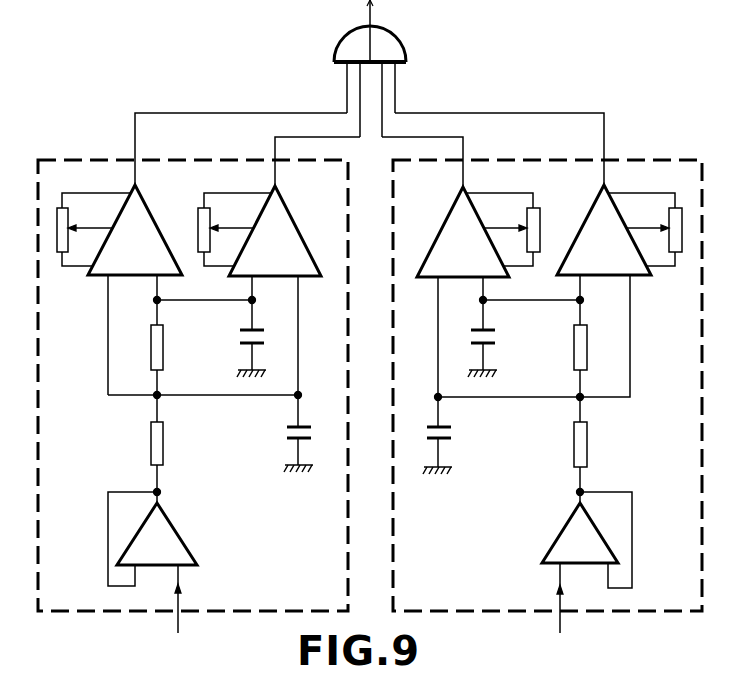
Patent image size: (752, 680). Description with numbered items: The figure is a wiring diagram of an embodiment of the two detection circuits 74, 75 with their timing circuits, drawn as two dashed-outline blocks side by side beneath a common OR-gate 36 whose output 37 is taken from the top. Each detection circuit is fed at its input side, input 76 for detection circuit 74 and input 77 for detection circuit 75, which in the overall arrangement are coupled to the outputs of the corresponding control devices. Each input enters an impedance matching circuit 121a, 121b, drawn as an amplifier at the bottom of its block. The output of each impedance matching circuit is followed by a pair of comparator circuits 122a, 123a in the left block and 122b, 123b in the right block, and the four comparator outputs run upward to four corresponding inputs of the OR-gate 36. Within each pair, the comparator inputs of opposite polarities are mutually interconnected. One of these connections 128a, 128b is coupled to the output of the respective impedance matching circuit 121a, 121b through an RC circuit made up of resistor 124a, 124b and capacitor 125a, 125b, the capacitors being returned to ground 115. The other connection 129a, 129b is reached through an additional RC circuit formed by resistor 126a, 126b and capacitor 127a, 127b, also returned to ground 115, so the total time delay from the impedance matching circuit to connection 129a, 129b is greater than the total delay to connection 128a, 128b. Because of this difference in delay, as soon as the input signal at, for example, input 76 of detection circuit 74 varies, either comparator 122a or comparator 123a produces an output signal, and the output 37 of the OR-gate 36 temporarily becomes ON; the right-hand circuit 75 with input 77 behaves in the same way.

The OR-gate 36 is at (402, 56).
The output of the OR-gate 37 is at (360, 26).
The detection circuit 74 is at (56, 160).
The detection circuit 75 is at (657, 160).
The input of detection circuit 74 76 is at (182, 617).
The input of detection circuit 75 77 is at (562, 617).
The ground 115 is at (292, 465).
The impedance matching circuit 121a is at (170, 538).
The impedance matching circuit 121b is at (573, 524).
The comparator circuit 122a is at (141, 216).
The comparator circuit 122b is at (596, 216).
The comparator circuit 123a is at (282, 216).
The comparator circuit 123b is at (456, 216).
The resistor of RC circuit 124a is at (176, 440).
The resistor of RC circuit 124b is at (587, 446).
The capacitor of RC circuit 125a is at (289, 427).
The capacitor of RC circuit 125b is at (460, 418).
The resistor of additional RC circuit 126a is at (173, 368).
The resistor of additional RC circuit 126b is at (574, 352).
The capacitor of additional RC circuit 127a is at (243, 329).
The capacitor of additional RC circuit 127b is at (496, 337).
The connection of comparator inputs 128a is at (107, 386).
The connection of comparator inputs 128b is at (630, 372).
The connection of comparator inputs 129a is at (186, 288).
The connection of comparator inputs 129b is at (500, 300).